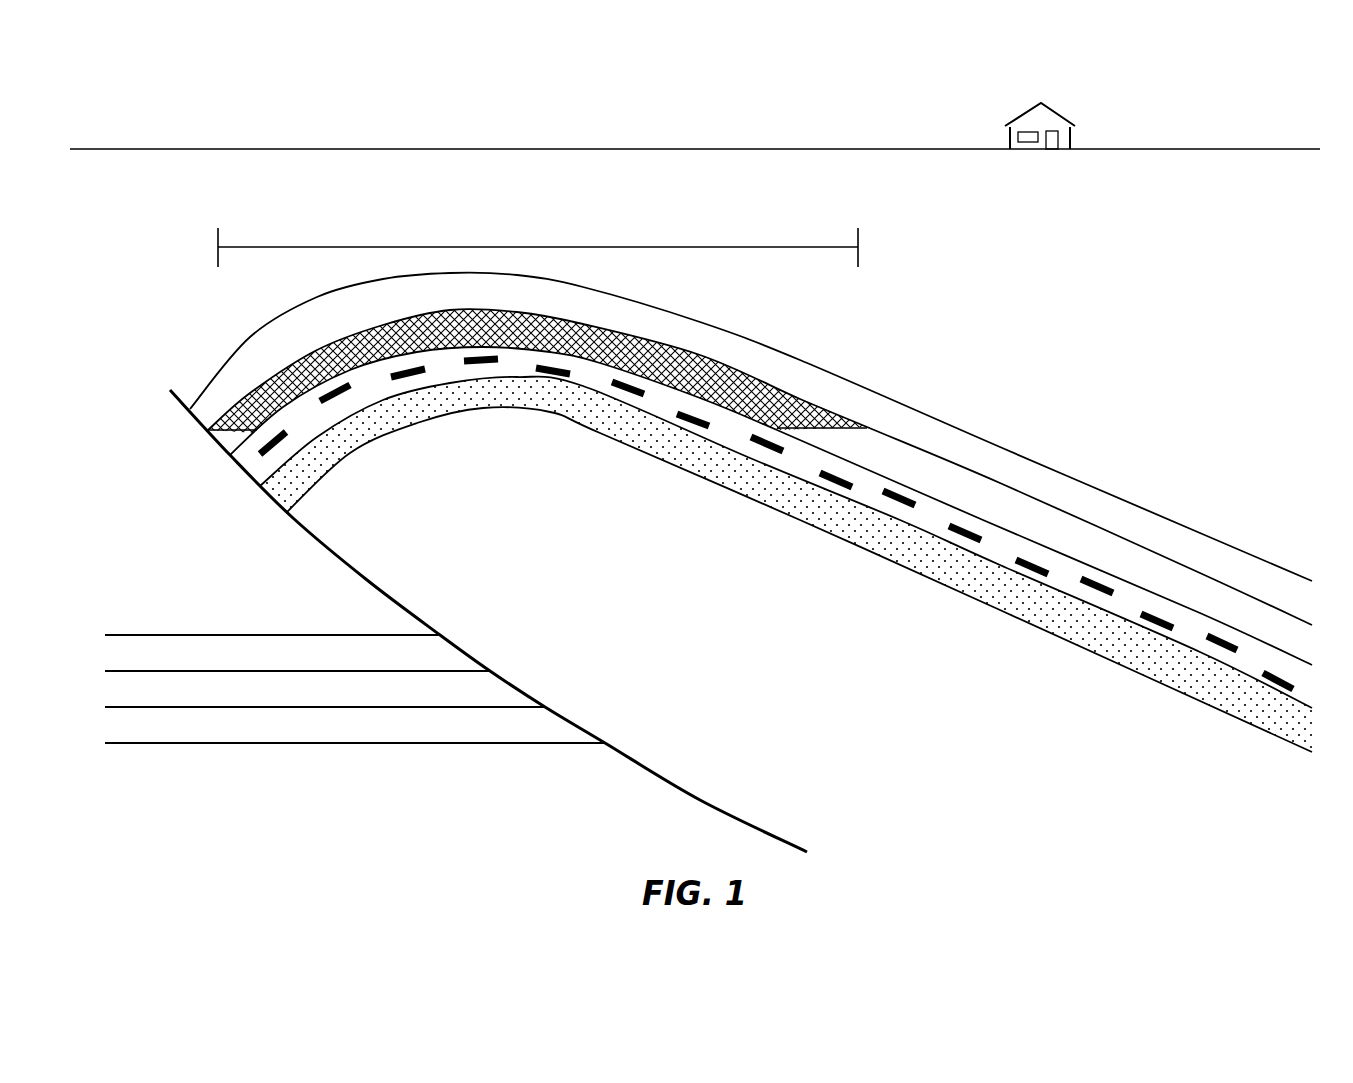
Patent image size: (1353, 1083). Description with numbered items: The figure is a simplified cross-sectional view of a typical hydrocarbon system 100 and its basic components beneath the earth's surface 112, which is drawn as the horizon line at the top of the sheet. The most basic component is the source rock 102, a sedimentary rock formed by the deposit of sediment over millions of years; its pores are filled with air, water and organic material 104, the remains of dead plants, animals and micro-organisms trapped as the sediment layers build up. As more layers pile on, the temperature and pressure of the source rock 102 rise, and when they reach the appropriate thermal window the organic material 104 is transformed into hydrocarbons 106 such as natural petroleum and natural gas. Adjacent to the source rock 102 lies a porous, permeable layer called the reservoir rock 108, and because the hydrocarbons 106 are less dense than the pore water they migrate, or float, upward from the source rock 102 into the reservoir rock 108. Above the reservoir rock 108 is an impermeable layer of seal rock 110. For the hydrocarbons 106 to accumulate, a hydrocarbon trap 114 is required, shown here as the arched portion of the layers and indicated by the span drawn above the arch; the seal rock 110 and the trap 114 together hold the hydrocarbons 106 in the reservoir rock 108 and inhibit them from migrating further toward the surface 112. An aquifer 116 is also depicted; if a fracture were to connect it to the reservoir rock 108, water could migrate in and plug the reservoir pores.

The hydrocarbon system 100 is at (226, 102).
The source rock 102 is at (992, 557).
The organic material 104 is at (830, 488).
The hydrocarbons 106 is at (778, 392).
The reservoir rock 108 is at (917, 458).
The seal rock 110 is at (652, 315).
The earth's surface 112 is at (410, 148).
The hydrocarbon trap 114 is at (515, 246).
The aquifer 116 is at (1078, 643).